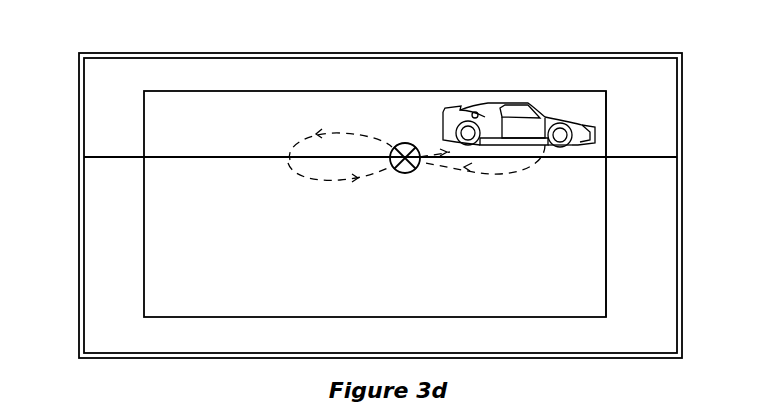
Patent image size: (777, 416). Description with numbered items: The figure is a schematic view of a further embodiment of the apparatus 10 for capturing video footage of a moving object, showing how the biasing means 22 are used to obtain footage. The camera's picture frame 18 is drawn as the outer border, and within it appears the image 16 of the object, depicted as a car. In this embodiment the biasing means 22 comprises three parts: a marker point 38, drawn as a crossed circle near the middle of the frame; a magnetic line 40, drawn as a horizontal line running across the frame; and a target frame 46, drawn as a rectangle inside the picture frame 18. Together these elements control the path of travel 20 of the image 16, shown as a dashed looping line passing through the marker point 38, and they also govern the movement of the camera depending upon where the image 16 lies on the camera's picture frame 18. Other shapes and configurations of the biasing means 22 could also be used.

The apparatus 10 is at (70, 88).
The image 16 is at (525, 122).
The camera's picture frame 18 is at (654, 53).
The path of travel 20 is at (305, 180).
The biasing means 22 is at (135, 298).
The marker point 38 is at (400, 174).
The magnetic line 40 is at (117, 158).
The target frame 46 is at (607, 233).